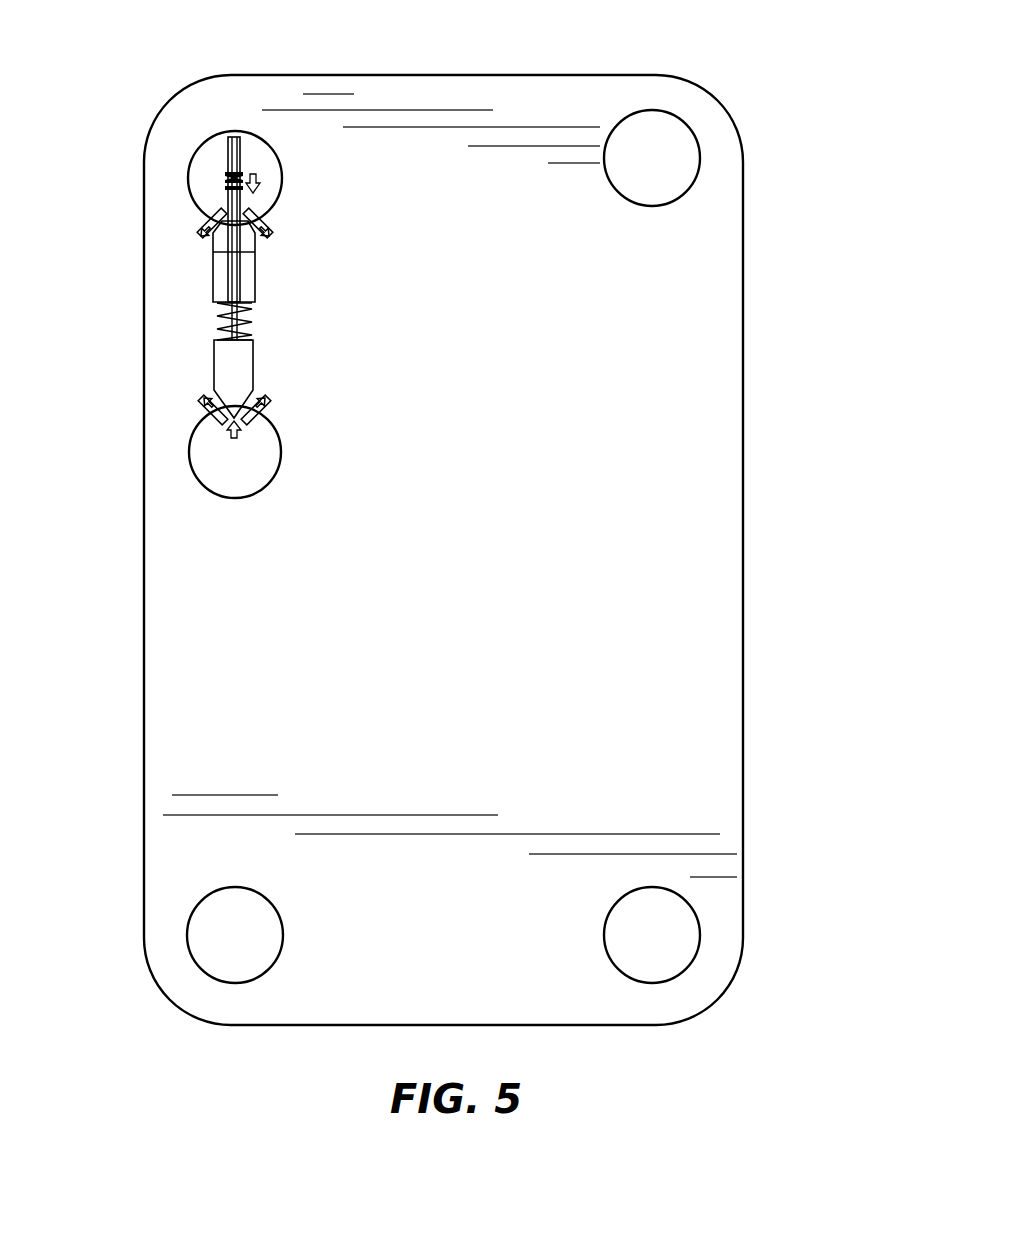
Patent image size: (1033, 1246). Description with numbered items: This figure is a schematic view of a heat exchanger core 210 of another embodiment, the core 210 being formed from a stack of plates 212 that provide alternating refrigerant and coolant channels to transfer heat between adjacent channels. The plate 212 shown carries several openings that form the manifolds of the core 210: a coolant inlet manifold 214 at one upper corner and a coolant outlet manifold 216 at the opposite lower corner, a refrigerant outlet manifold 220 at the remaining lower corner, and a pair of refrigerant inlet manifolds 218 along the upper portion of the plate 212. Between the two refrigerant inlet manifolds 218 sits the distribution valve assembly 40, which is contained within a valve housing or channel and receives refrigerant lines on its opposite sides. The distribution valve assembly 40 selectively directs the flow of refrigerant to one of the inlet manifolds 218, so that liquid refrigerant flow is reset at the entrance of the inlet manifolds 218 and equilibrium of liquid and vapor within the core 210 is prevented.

The core 210 is at (580, 58).
The plates 212 is at (203, 683).
The coolant inlet manifold 214 is at (673, 137).
The coolant outlet manifold 216 is at (223, 943).
The refrigerant inlet manifolds 218 is at (198, 178).
The refrigerant outlet manifold 220 is at (665, 945).
The distribution valve assembly 40 is at (194, 297).